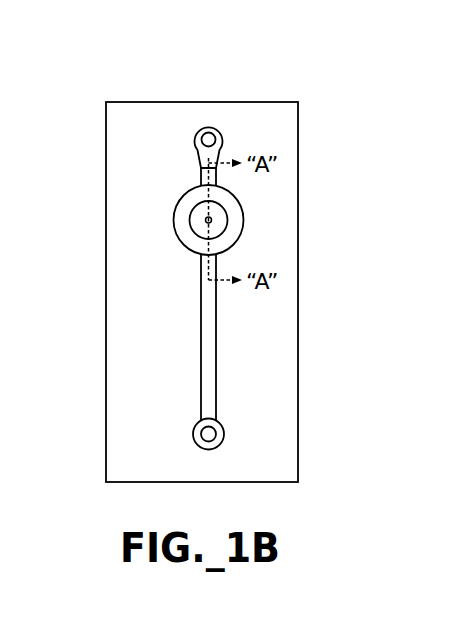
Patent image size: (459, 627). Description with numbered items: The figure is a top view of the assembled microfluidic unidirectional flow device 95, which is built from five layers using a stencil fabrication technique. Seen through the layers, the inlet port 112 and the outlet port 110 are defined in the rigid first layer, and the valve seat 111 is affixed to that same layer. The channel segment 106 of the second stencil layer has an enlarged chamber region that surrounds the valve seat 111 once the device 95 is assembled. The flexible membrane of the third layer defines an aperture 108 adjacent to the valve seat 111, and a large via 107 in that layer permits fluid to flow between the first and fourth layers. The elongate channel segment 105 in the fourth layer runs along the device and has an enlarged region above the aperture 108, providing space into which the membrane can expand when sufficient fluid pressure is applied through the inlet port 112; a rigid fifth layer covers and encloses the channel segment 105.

The microfluidic unidirectional flow device 95 is at (90, 60).
The elongate channel segment 105 is at (202, 342).
The channel segment 106 is at (194, 141).
The via 107 is at (199, 442).
The aperture 108 is at (206, 220).
The outlet port 110 is at (197, 429).
The valve seat 111 is at (195, 205).
The inlet port 112 is at (215, 135).